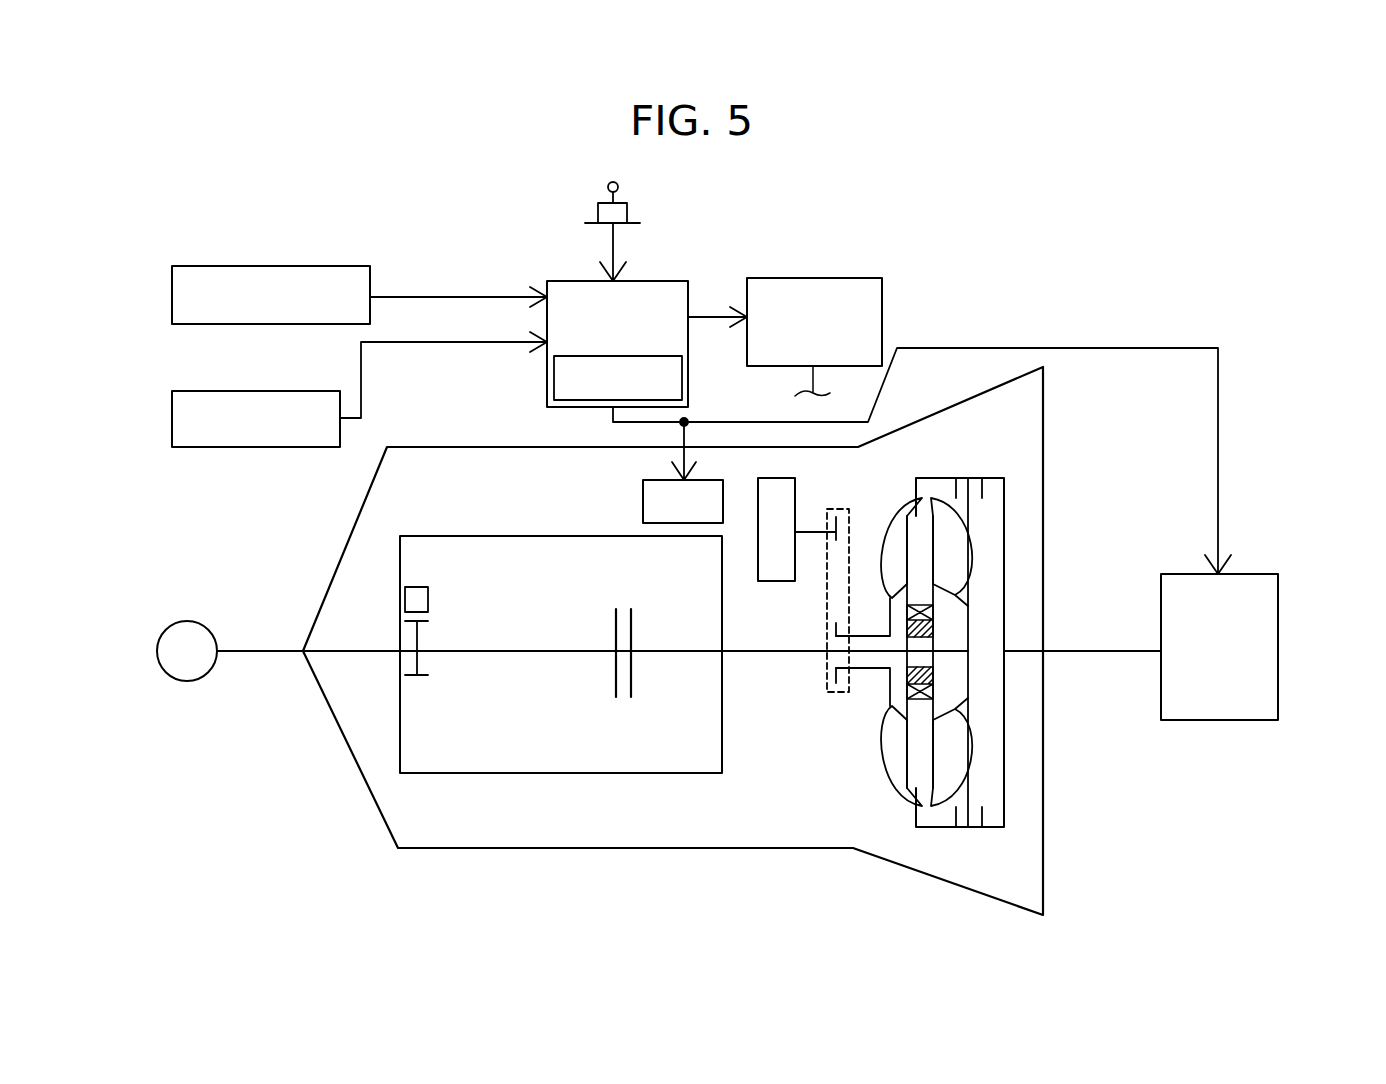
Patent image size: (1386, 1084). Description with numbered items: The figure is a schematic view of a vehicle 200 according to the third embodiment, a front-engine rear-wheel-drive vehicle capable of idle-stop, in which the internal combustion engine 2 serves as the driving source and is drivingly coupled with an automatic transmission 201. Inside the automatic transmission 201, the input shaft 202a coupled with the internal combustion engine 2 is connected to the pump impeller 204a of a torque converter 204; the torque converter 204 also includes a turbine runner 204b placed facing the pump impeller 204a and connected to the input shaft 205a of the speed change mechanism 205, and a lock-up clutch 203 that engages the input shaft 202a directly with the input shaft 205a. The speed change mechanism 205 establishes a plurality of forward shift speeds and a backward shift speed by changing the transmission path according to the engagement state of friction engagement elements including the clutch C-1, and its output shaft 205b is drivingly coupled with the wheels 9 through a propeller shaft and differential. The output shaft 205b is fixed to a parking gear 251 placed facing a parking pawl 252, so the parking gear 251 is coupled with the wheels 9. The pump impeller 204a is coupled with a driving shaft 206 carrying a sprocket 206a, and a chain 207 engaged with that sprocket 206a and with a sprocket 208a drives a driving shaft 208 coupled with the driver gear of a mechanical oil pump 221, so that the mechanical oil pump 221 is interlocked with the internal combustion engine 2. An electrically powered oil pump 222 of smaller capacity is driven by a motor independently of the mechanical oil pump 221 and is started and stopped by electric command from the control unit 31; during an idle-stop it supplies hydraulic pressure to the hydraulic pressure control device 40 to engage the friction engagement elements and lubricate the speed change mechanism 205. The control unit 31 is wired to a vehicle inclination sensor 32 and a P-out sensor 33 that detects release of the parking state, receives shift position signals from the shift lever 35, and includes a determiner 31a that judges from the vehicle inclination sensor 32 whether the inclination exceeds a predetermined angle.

The internal combustion engine 2 is at (1262, 576).
The wheels 9 is at (185, 618).
The control unit 31 is at (587, 317).
The determiner 31a is at (548, 383).
The vehicle inclination sensor 32 is at (225, 266).
The P-out sensor 33 is at (225, 391).
The shift lever 35 is at (607, 188).
The hydraulic pressure control device 40 is at (848, 278).
The vehicle 200 is at (752, 225).
The automatic transmission 201 is at (952, 272).
The input shaft 202a is at (1100, 648).
The lock-up clutch 203 is at (987, 493).
The torque converter 204 is at (938, 606).
The pump impeller 204a is at (897, 515).
The turbine runner 204b is at (937, 510).
The speed change mechanism 205 is at (462, 535).
The input shaft 205a is at (742, 650).
The output shaft 205b is at (355, 648).
The driving shaft 206 is at (845, 628).
The sprocket 206a is at (860, 705).
The chain 207 is at (820, 680).
The driving shaft 208 is at (827, 527).
The sprocket 208a is at (845, 509).
The mechanical oil pump 221 is at (758, 510).
The electrically powered oil pump 222 is at (643, 498).
The parking gear 251 is at (417, 676).
The parking pawl 252 is at (428, 588).
The clutch C-1 is at (628, 609).